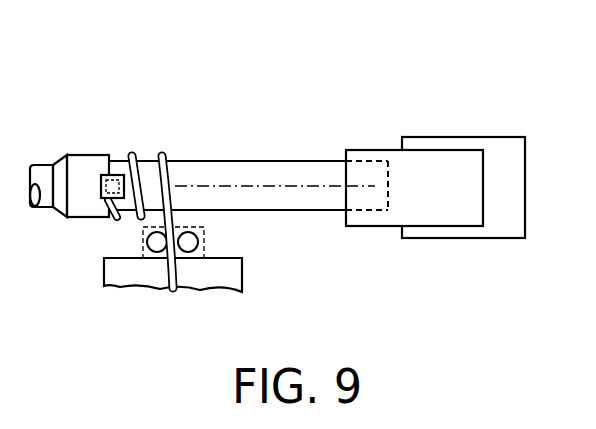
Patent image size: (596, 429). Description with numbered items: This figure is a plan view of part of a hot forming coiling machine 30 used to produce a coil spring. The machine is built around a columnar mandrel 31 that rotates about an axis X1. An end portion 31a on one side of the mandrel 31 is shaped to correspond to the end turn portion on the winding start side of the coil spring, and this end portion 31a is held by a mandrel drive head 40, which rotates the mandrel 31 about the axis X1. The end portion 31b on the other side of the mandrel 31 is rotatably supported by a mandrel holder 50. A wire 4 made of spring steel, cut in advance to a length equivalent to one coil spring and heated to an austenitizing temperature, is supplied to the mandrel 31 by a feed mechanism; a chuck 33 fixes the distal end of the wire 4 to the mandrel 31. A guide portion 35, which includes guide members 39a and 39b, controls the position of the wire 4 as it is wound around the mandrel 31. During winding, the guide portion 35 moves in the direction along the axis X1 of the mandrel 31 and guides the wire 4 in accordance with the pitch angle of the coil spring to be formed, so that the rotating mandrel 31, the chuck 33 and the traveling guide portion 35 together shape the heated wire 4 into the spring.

The hot forming coiling machine 30 is at (360, 90).
The mandrel drive head 40 is at (73, 154).
The chuck 33 is at (107, 175).
The end portion on one side of the mandrel 31a is at (129, 157).
The wire 4 is at (168, 183).
The mandrel 31 is at (259, 175).
The axis X1 is at (206, 184).
The end portion on the other side of the mandrel 31b is at (390, 194).
The mandrel holder 50 is at (468, 163).
The guide member 39a is at (146, 238).
The guide member 39b is at (203, 242).
The guide portion 35 is at (256, 262).